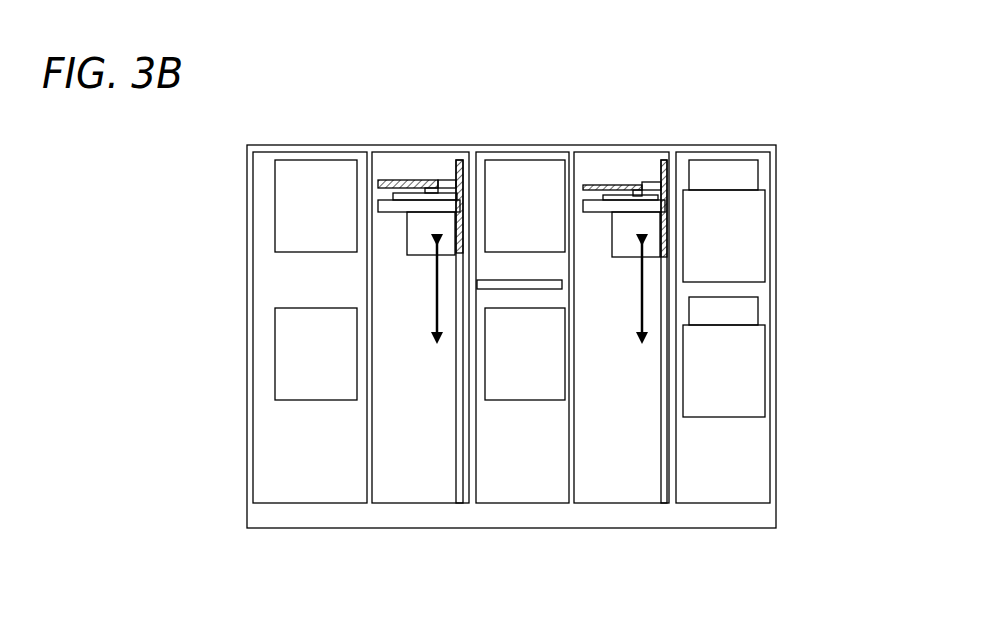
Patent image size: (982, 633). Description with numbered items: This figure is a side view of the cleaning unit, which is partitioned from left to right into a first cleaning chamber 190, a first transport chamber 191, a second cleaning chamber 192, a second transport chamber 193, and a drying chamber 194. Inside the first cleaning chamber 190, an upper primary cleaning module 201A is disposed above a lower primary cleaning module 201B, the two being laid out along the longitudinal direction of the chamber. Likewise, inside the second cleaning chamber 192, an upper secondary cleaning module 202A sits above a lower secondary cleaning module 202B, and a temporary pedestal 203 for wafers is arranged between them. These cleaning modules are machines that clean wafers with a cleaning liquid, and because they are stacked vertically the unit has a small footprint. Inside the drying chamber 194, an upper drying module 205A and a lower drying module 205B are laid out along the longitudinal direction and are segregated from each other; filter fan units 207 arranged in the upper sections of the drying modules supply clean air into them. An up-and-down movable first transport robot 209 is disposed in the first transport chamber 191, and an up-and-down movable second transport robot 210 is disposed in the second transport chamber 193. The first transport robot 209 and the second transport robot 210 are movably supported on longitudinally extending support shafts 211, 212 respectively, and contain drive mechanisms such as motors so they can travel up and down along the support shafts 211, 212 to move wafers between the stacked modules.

The first cleaning chamber 190 is at (310, 488).
The first transport chamber 191 is at (413, 488).
The second cleaning chamber 192 is at (518, 490).
The second transport chamber 193 is at (618, 490).
The drying chamber 194 is at (722, 490).
The upper primary cleaning module 201A is at (318, 175).
The lower primary cleaning module 201B is at (315, 380).
The upper secondary cleaning module 202A is at (525, 175).
The lower secondary cleaning module 202B is at (525, 382).
The temporary pedestal 203 is at (548, 290).
The upper drying module 205A is at (755, 242).
The lower drying module 205B is at (755, 372).
The filter fan unit 207 is at (758, 186).
The first transport robot 209 is at (417, 180).
The second transport robot 210 is at (622, 185).
The support shaft 211 is at (460, 160).
The support shaft 212 is at (664, 160).